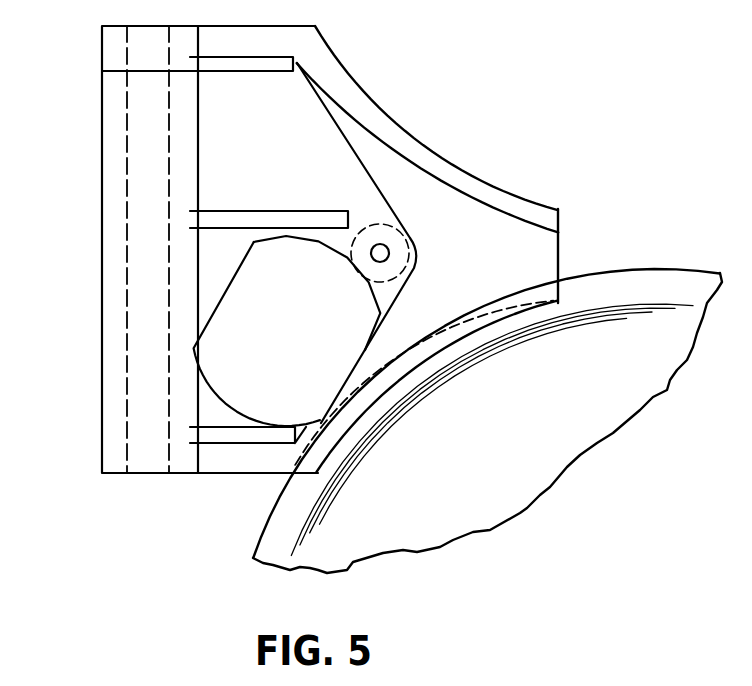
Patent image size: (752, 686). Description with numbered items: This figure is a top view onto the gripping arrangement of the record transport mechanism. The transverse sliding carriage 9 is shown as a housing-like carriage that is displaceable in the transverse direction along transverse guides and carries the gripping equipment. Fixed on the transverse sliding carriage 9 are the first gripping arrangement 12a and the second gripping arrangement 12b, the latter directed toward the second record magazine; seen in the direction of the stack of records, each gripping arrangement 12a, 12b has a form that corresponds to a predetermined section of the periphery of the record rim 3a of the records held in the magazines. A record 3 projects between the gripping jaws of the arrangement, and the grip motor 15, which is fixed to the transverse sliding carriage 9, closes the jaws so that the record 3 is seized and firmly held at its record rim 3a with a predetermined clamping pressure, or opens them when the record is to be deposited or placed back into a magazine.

The record 3 is at (563, 448).
The record rim 3a is at (657, 270).
The transverse sliding carriage 9 is at (225, 127).
The first gripping arrangement 12a is at (553, 300).
The second gripping arrangement 12b is at (483, 187).
The grip motor 15 is at (213, 330).